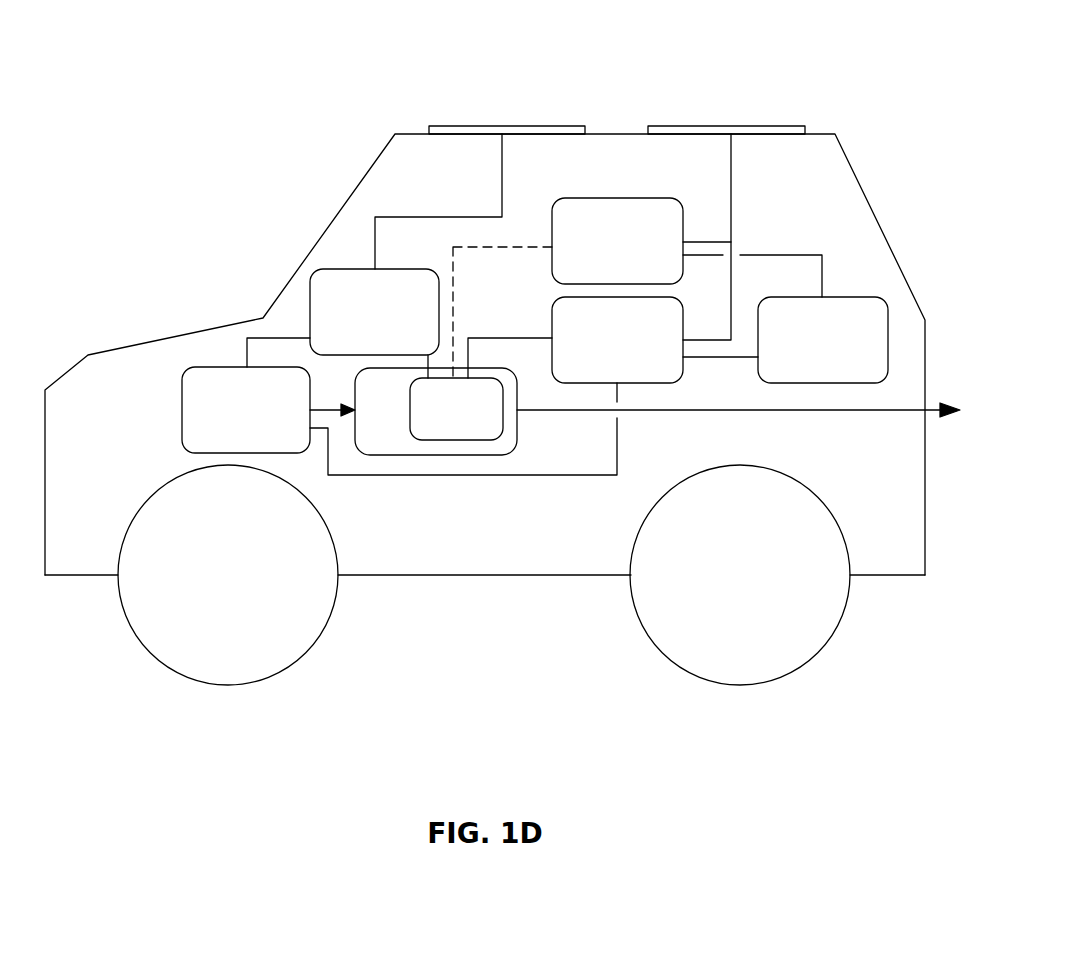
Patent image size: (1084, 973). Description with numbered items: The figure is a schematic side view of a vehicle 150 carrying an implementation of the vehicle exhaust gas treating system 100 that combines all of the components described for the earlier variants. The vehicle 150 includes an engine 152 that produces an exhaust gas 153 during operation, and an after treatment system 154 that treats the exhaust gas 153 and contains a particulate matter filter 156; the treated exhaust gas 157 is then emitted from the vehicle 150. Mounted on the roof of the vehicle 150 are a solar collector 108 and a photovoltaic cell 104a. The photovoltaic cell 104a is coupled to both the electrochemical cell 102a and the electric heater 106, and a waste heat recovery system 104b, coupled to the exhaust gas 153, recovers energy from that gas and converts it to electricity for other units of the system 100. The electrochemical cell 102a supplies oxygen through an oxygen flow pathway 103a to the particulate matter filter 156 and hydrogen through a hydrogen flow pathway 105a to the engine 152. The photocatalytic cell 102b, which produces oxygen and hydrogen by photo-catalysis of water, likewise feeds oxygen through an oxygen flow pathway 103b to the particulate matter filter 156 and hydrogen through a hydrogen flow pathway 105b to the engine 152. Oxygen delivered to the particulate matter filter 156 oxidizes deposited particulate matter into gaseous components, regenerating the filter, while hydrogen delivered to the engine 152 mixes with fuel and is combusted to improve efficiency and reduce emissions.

The vehicle exhaust gas treating system 100 is at (879, 106).
The vehicle 150 is at (890, 248).
The solar collector 108 is at (500, 126).
The photovoltaic cell 104a is at (712, 126).
The waste heat recovery system 104b is at (823, 340).
The electrochemical cell 102a is at (655, 340).
The photocatalytic cell 102b is at (374, 312).
The electric heater 106 is at (687, 247).
The engine 152 is at (246, 410).
The exhaust gas 153 is at (315, 407).
The after treatment system 154 is at (517, 428).
The particulate matter filter 156 is at (456, 409).
The treated exhaust gas 157 is at (893, 412).
The oxygen flow pathway 103a is at (525, 338).
The oxygen flow pathway 103b is at (428, 356).
The hydrogen flow pathway 105a is at (567, 475).
The hydrogen flow pathway 105b is at (278, 338).